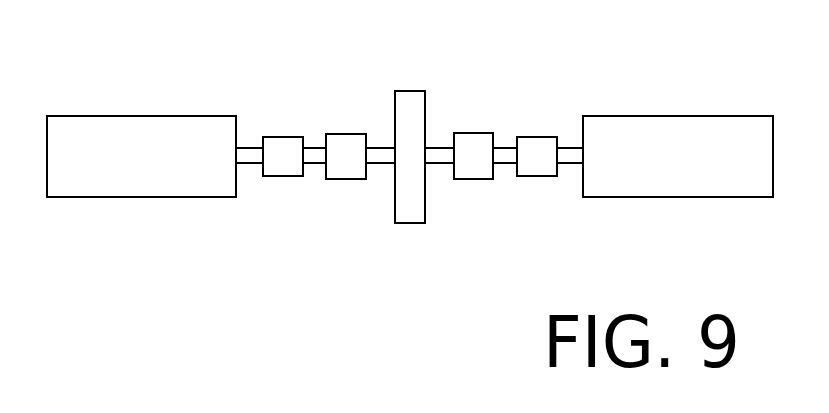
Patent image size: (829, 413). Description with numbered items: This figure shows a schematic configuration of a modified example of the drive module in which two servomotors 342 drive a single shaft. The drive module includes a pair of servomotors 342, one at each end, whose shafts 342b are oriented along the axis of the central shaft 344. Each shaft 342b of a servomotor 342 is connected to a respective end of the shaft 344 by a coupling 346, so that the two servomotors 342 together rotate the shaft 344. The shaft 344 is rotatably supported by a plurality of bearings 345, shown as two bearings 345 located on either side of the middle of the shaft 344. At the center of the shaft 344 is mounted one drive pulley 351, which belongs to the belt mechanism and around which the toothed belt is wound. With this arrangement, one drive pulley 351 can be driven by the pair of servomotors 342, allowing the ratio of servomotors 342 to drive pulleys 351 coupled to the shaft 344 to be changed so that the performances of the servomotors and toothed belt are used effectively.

The servomotor 342 is at (123, 116).
The shaft 342b is at (252, 147).
The shaft 344 is at (505, 165).
The bearing 345 is at (348, 134).
The coupling 346 is at (540, 177).
The drive pulley 351 is at (408, 91).